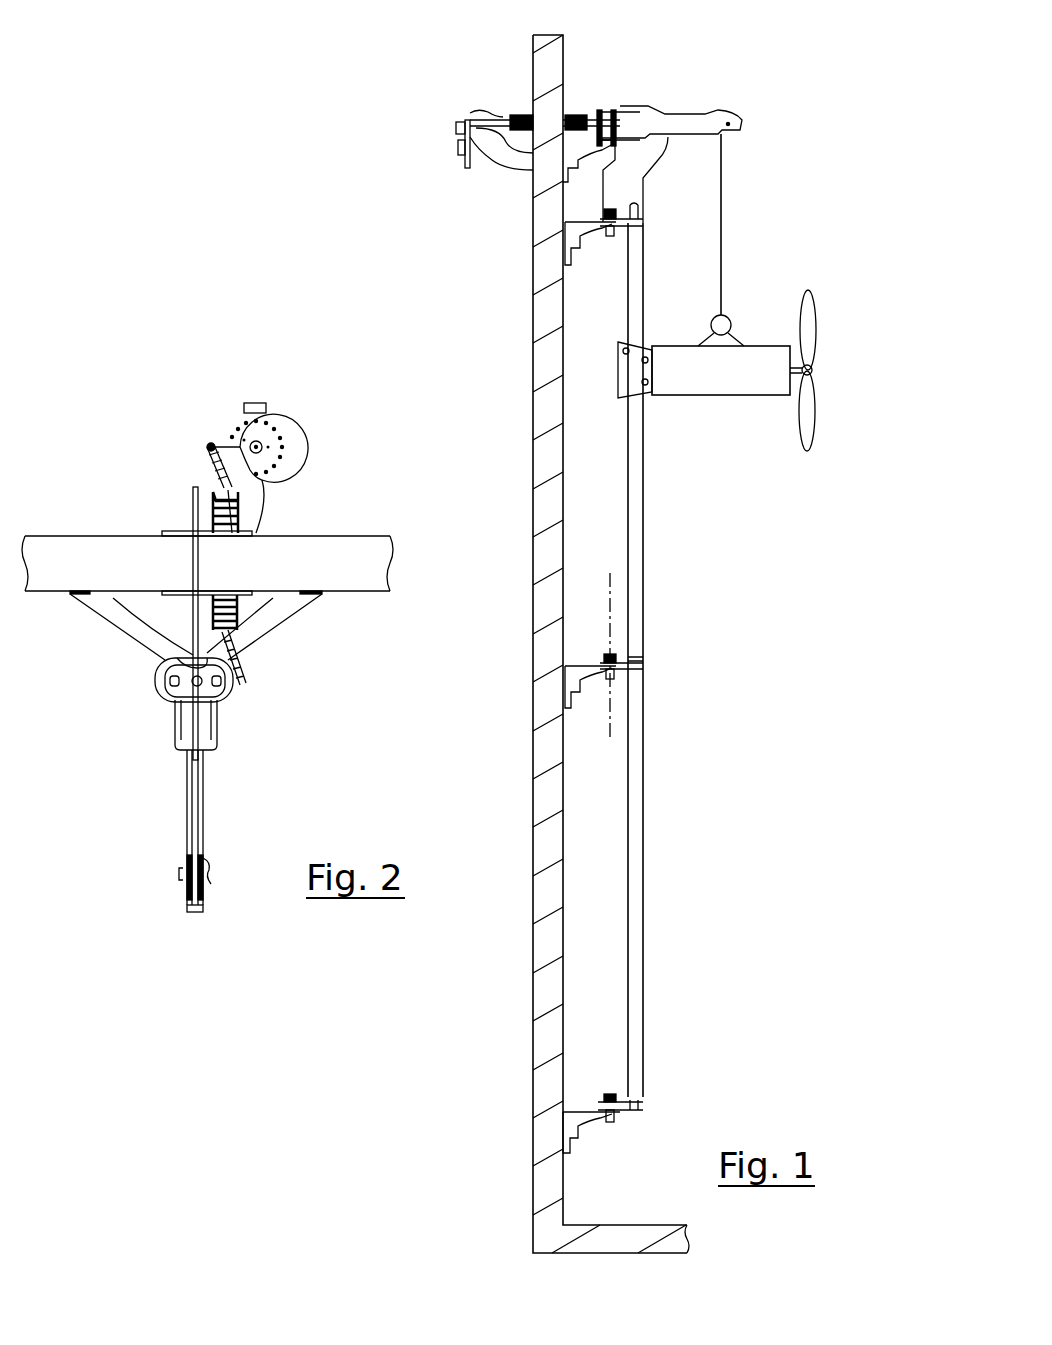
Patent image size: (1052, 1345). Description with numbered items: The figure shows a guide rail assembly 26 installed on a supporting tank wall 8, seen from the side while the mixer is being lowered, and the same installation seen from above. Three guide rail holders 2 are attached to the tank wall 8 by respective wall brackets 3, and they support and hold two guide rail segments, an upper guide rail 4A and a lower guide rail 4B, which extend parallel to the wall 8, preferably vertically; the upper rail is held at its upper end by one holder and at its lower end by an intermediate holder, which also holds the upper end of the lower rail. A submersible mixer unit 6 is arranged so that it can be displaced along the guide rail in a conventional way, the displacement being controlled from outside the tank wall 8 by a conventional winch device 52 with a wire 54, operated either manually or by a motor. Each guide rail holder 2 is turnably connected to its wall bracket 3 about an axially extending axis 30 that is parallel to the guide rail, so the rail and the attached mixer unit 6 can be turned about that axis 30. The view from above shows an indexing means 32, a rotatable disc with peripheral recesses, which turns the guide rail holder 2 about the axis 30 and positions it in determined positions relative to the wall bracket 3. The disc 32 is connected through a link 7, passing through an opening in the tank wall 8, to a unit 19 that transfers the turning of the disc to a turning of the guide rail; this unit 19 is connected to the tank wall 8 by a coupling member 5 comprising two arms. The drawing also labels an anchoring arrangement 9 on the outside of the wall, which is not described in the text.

In FIG. 1, the guide rail holder 2 is at (642, 221).
In FIG. 1, the wall bracket 3 is at (565, 230).
In FIG. 1, the upper guide rail 4A is at (643, 483).
In FIG. 1, the lower guide rail 4B is at (643, 977).
In FIG. 2, the coupling member 5 is at (258, 624).
In FIG. 1, the submersible mixer unit 6 is at (765, 346).
In FIG. 2, the link 7 is at (193, 516).
In FIG. 1, the tank wall 8 is at (557, 56).
In FIG. 2, the tank wall 8 is at (364, 554).
In FIG. 1, the anchor mechanism 9 is at (497, 112).
In FIG. 2, the unit 19 is at (193, 709).
In FIG. 1, the guide rail assembly 26 is at (770, 777).
In FIG. 1, the axis 30 is at (612, 614).
In FIG. 2, the indexing means 32 is at (270, 432).
In FIG. 1, the winch device 52 is at (690, 108).
In FIG. 1, the wire 54 is at (722, 183).